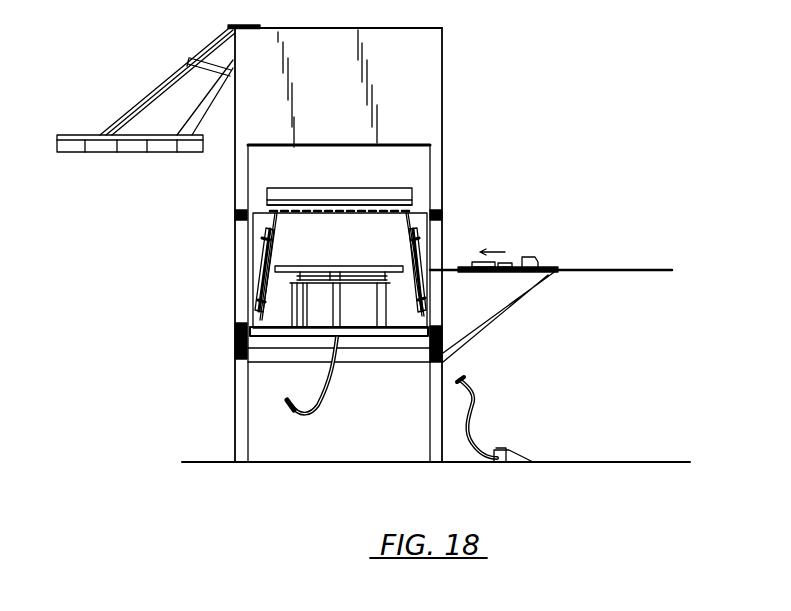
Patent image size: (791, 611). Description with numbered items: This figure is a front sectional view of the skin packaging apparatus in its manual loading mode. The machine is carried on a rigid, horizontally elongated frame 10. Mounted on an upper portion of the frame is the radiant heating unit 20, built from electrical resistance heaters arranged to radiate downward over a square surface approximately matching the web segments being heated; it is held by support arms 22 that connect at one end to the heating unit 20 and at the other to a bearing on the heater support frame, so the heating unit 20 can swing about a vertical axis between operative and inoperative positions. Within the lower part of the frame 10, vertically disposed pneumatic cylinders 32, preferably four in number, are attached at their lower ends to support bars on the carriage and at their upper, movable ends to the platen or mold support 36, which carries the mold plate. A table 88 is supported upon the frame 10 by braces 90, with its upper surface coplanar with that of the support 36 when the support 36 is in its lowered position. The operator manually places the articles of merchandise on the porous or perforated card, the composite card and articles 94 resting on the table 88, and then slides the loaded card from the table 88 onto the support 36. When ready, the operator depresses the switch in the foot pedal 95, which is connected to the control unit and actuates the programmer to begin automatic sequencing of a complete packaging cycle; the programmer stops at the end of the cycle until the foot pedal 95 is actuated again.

The frame 10 is at (235, 408).
The radiant heating unit 20 is at (108, 152).
The support arms 22 is at (192, 113).
The pneumatic cylinders 32 is at (307, 300).
The platen or mold support 36 is at (274, 252).
The table 88 is at (612, 270).
The braces 90 is at (528, 297).
The card and articles 94 is at (515, 255).
The foot pedal 95 is at (496, 447).